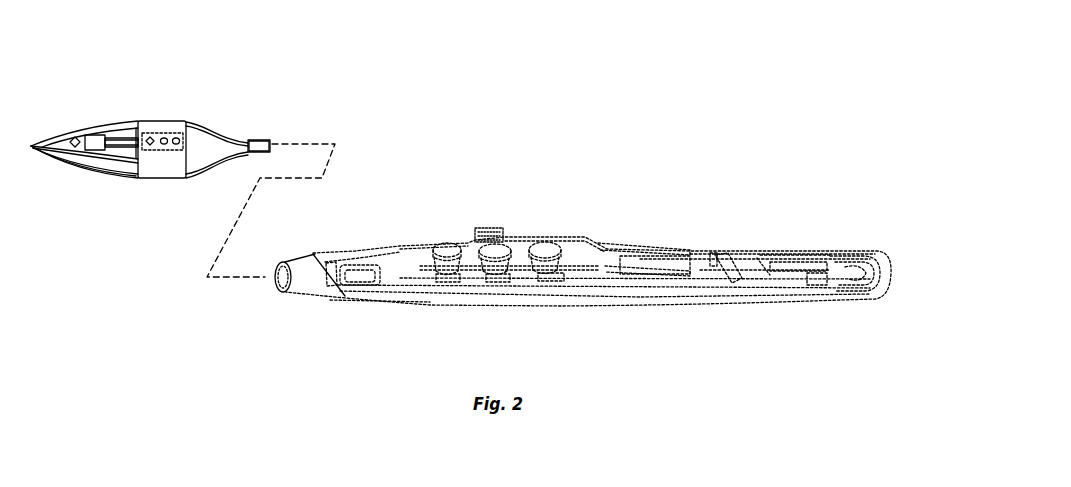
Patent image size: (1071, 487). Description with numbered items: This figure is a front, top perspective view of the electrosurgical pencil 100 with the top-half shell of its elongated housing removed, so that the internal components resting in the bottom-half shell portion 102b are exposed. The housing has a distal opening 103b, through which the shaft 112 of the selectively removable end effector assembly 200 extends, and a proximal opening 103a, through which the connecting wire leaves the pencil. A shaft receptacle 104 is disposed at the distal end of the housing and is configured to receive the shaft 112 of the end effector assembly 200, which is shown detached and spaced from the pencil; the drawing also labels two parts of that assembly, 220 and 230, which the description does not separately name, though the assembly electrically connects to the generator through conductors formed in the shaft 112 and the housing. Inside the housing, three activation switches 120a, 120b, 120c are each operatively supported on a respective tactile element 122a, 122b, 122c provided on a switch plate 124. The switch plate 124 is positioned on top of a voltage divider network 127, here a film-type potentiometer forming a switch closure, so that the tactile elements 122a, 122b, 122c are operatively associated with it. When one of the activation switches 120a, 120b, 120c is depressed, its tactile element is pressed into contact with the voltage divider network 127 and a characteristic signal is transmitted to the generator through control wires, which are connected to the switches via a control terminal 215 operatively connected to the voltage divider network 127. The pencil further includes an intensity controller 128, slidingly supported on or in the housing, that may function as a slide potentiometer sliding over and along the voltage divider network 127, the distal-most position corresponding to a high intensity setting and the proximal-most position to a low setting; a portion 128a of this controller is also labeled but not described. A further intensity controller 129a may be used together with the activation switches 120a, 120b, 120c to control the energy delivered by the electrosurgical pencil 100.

The electrosurgical pencil 100 is at (604, 256).
The bottom-half shell portion 102b is at (658, 298).
The proximal opening 103a is at (890, 272).
The distal opening 103b is at (282, 290).
The shaft receptacle 104 is at (370, 296).
The shaft 112 is at (261, 138).
The activation switch 120a is at (452, 242).
The activation switch 120b is at (493, 230).
The activation switch 120c is at (545, 243).
The tactile element 122a is at (445, 292).
The tactile element 122b is at (500, 292).
The tactile element 122c is at (553, 292).
The switch plate 124 is at (409, 248).
The voltage divider network 127 is at (707, 255).
The intensity controller 128 is at (582, 227).
The housing arm 128a is at (678, 248).
The intensity controller 129a is at (495, 230).
The end effector assembly 200 is at (58, 80).
The control terminal 215 is at (753, 258).
The applicator housing 220 is at (188, 121).
The applicator tip 230 is at (39, 158).